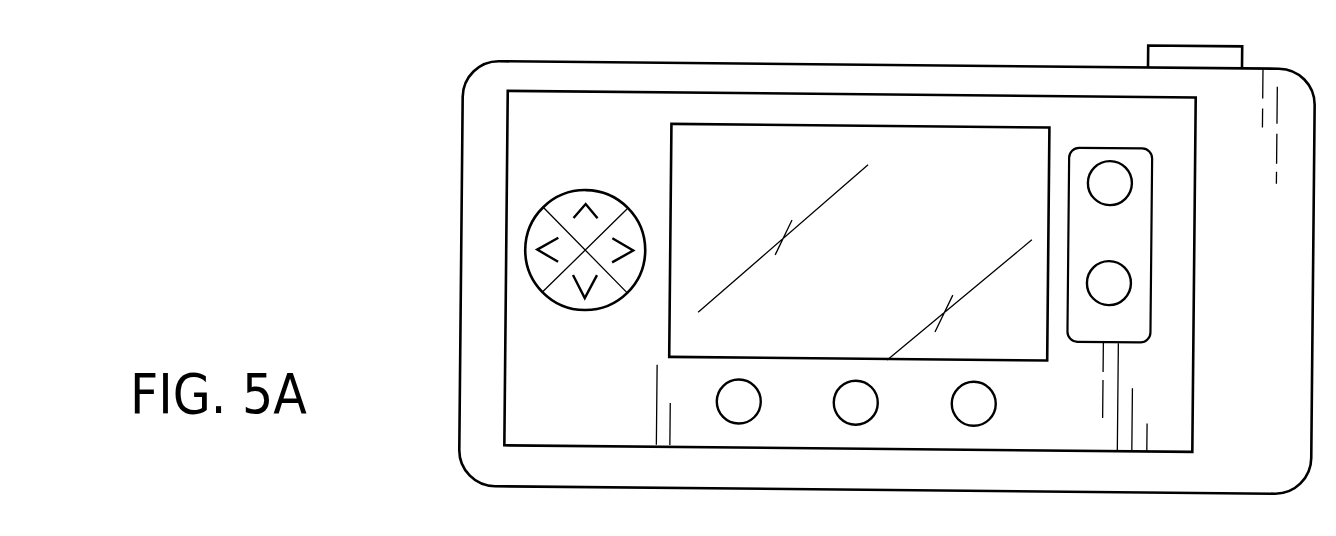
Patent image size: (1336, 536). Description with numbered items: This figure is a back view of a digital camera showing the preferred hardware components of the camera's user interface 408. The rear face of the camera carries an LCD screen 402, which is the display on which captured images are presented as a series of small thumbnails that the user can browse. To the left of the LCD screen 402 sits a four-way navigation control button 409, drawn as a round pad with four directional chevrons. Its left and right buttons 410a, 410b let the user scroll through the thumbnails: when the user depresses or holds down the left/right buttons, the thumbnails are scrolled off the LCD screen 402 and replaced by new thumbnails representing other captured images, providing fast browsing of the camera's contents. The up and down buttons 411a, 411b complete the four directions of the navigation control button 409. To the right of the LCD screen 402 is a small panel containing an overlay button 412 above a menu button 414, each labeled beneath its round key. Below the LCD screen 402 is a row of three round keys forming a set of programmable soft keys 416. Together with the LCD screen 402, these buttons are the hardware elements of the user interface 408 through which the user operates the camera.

The user interface 408 is at (247, 318).
The LCD screen 402 is at (887, 253).
The four-way navigation control button 409 is at (547, 178).
The left button 410a is at (537, 272).
The right button 410b is at (545, 213).
The up button 411a is at (606, 193).
The down button 411b is at (603, 300).
The overlay button 412 is at (1132, 186).
The menu button 414 is at (1131, 285).
The programmable soft keys 416 is at (974, 426).